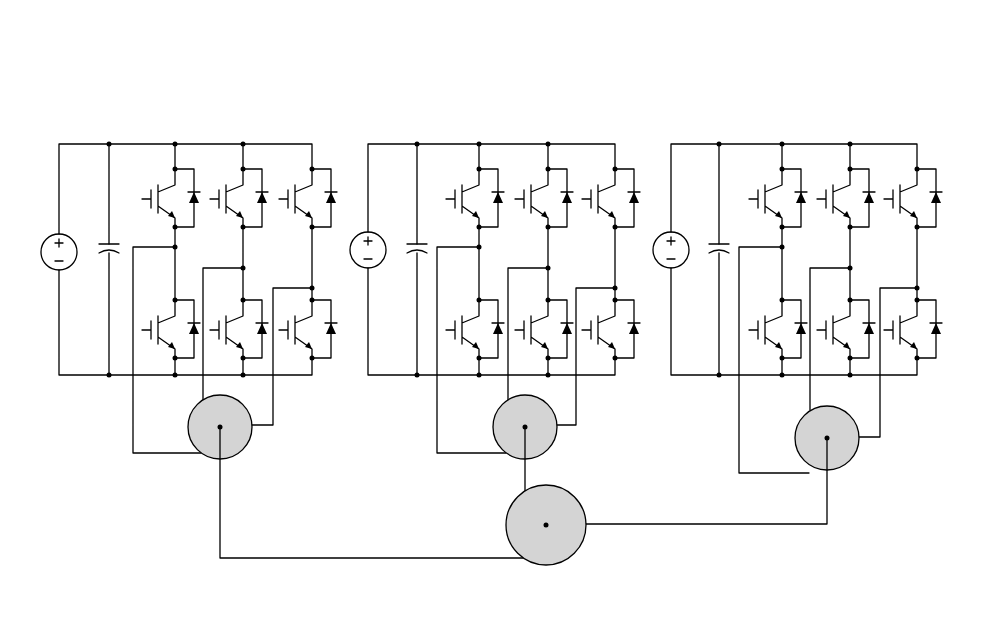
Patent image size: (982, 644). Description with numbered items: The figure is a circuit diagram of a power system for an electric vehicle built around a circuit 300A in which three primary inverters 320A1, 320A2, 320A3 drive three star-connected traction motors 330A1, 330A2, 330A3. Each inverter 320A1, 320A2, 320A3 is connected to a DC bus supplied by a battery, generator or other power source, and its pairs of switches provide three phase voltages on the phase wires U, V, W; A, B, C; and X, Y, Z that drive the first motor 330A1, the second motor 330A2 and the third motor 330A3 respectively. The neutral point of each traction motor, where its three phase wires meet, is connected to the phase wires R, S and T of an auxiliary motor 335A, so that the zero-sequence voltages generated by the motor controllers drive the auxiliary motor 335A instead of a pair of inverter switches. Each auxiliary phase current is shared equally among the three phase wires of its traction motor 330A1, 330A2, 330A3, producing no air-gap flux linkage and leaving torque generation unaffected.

The circuit 300A is at (70, 42).
The inverter 320A1 is at (333, 112).
The inverter 320A2 is at (647, 112).
The inverter 320A3 is at (942, 112).
The motor 1 330A1 is at (252, 431).
The motor 2 330A2 is at (557, 431).
The motor 3 330A3 is at (859, 441).
The auxiliary motor 335A is at (585, 540).